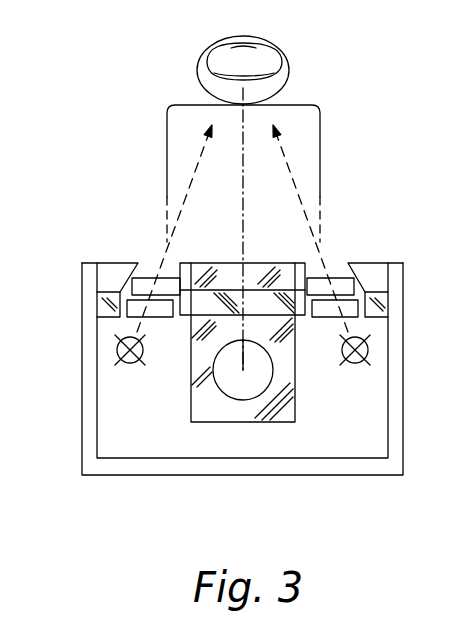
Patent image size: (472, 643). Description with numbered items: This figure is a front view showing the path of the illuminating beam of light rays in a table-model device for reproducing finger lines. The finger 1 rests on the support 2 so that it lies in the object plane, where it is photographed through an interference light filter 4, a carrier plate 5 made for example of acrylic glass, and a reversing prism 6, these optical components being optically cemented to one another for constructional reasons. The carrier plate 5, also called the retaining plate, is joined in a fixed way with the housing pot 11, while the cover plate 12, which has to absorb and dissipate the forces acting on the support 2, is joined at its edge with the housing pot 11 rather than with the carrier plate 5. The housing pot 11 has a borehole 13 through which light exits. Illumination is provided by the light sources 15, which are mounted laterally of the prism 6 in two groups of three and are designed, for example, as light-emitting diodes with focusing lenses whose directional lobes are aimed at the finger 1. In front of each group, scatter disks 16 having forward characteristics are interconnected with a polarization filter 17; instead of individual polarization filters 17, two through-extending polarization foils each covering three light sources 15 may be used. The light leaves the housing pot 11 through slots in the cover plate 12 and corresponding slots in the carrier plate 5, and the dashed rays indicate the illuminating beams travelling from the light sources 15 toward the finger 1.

The finger 1 is at (285, 58).
The support 2 is at (170, 143).
The interference light filter 4 is at (255, 265).
The carrier plate 5 is at (232, 290).
The reversing prism 6 is at (237, 415).
The housing pot 11 is at (130, 472).
The cover plate 12 is at (375, 268).
The borehole 13 is at (217, 390).
The light sources 15 is at (126, 363).
The scatter disks 16 is at (152, 317).
The polarization filter 17 is at (147, 277).